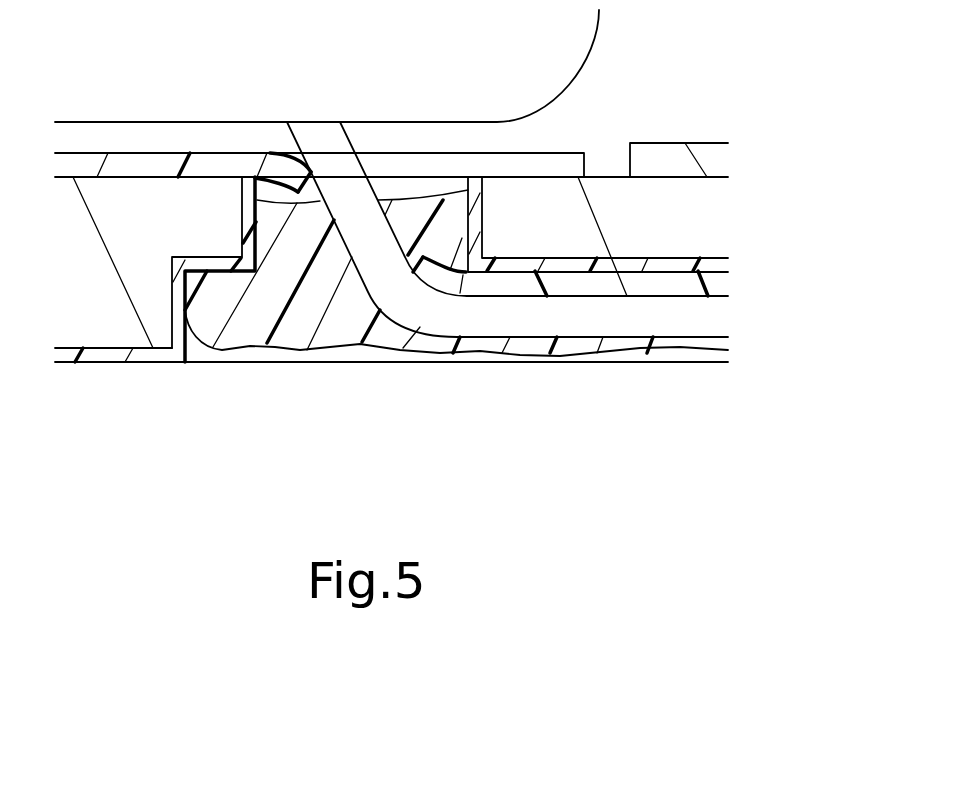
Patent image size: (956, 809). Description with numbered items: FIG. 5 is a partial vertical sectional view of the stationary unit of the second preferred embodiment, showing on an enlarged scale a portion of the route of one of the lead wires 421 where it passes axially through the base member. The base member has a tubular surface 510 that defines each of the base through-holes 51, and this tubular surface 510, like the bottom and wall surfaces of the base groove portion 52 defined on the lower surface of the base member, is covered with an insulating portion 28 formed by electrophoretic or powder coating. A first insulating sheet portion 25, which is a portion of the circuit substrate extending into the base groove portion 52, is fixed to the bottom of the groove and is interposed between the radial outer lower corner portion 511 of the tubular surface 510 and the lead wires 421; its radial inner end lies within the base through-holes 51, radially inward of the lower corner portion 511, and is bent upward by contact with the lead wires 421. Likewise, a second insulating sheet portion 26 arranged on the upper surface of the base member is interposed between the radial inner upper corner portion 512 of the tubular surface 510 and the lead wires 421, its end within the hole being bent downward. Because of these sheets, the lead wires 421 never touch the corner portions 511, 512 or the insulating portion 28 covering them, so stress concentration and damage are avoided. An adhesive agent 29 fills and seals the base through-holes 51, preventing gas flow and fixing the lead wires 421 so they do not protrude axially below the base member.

The first insulating sheet portion 25 is at (562, 283).
The second insulating sheet portion 26 is at (150, 167).
The insulating portion 28 is at (158, 356).
The adhesive agent 29 is at (293, 250).
The base through-holes 51 is at (316, 282).
The base groove portion 52 is at (672, 350).
The lead wires 421 is at (408, 307).
The tubular surface 510 is at (468, 213).
The radial outer lower corner portion 511 is at (470, 276).
The radial inner upper corner portion 512 is at (245, 177).